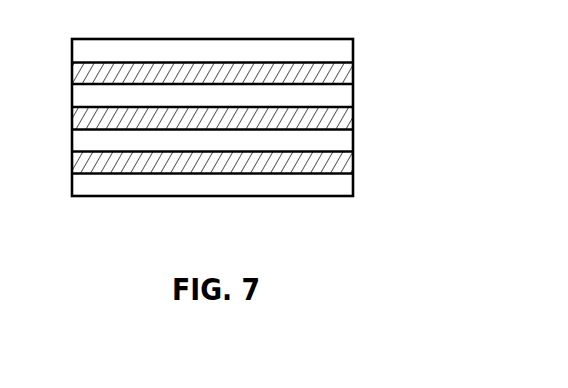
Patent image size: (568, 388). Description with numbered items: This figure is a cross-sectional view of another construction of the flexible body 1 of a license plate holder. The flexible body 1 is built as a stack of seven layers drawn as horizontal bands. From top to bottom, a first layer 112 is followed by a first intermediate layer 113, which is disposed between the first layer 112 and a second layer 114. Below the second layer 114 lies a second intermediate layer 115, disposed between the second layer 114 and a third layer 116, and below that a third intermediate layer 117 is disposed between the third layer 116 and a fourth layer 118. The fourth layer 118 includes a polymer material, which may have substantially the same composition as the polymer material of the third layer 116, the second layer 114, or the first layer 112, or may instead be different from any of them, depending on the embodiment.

The flexible body 1 is at (188, 117).
The first layer 112 is at (247, 43).
The first intermediate layer 113 is at (242, 72).
The second layer 114 is at (343, 98).
The second intermediate layer 115 is at (253, 127).
The third layer 116 is at (251, 156).
The third intermediate layer 117 is at (253, 172).
The fourth layer 118 is at (251, 198).